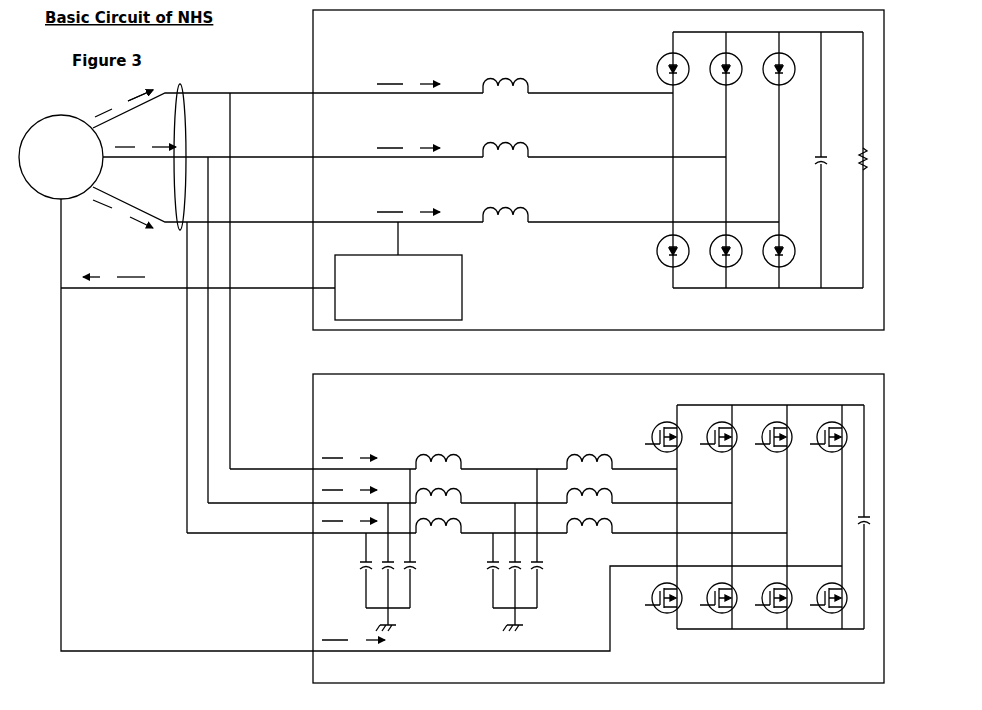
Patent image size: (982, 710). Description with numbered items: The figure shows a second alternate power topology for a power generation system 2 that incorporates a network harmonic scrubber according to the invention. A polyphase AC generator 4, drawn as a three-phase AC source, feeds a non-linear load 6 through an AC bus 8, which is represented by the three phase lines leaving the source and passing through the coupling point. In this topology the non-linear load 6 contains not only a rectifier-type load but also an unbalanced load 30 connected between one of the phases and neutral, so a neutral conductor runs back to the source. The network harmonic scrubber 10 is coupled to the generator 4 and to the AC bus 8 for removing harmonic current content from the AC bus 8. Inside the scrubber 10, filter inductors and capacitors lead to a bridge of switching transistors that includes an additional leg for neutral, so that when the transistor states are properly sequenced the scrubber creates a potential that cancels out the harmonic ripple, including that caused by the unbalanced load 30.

The power generation system 2 is at (143, 355).
The polyphase AC generator 4 is at (60, 115).
The non-linear load 6 is at (313, 52).
The AC bus 8 is at (183, 88).
The network harmonic scrubber 10 is at (313, 400).
The unbalanced load 30 is at (462, 273).